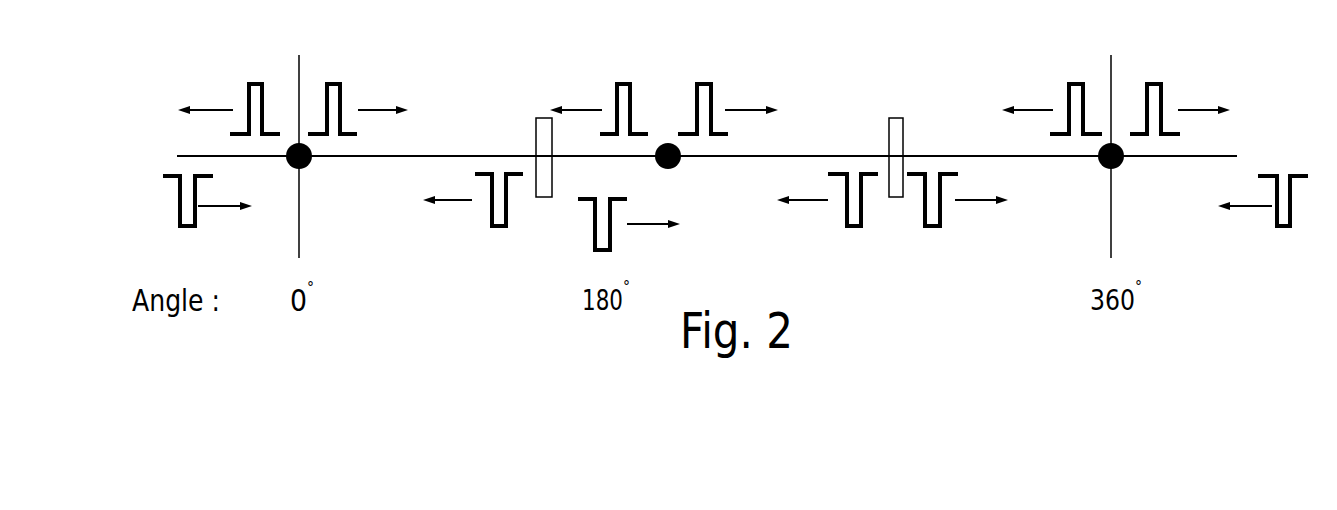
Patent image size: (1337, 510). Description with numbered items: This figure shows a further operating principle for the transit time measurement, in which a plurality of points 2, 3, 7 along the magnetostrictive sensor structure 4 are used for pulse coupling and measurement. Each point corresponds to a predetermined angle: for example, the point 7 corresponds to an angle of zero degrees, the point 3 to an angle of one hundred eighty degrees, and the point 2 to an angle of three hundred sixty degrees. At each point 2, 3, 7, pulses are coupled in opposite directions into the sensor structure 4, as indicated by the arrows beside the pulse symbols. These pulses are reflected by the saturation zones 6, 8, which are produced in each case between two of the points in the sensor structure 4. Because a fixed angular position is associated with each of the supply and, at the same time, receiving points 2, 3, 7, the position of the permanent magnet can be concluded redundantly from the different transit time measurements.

The point 2 is at (674, 165).
The point 3 is at (1117, 165).
The magnetostrictive sensor structure 4 is at (797, 152).
The saturation zone 6 is at (895, 117).
The point 7 is at (305, 165).
The saturation zone 8 is at (545, 117).